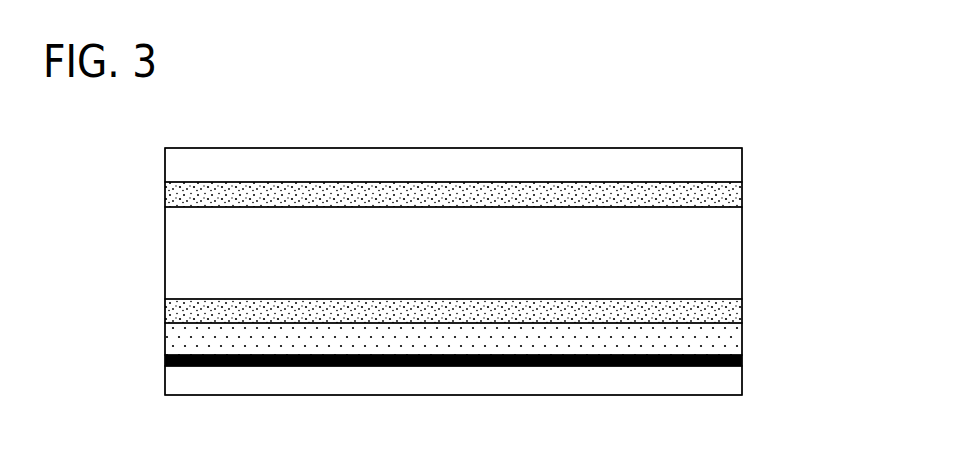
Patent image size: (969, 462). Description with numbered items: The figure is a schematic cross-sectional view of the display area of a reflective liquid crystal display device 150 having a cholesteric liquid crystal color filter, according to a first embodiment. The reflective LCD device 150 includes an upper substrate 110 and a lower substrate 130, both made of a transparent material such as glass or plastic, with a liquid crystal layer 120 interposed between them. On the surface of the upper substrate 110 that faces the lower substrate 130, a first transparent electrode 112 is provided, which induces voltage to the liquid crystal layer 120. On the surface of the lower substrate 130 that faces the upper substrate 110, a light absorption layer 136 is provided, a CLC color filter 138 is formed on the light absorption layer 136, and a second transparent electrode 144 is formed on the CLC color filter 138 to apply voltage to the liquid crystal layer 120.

The reflective LCD device 150 is at (706, 111).
The upper substrate 110 is at (476, 173).
The first transparent electrode 112 is at (735, 192).
The liquid crystal layer 120 is at (175, 260).
The second transparent electrode 144 is at (735, 313).
The CLC color filter 138 is at (727, 337).
The light absorption layer 136 is at (742, 358).
The lower substrate 130 is at (453, 379).